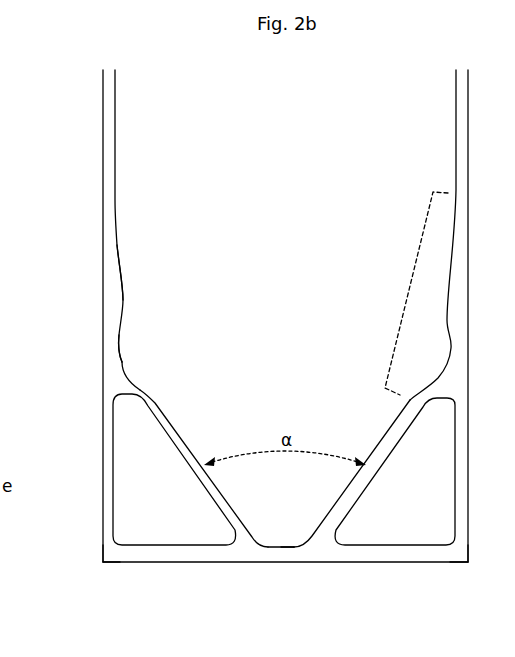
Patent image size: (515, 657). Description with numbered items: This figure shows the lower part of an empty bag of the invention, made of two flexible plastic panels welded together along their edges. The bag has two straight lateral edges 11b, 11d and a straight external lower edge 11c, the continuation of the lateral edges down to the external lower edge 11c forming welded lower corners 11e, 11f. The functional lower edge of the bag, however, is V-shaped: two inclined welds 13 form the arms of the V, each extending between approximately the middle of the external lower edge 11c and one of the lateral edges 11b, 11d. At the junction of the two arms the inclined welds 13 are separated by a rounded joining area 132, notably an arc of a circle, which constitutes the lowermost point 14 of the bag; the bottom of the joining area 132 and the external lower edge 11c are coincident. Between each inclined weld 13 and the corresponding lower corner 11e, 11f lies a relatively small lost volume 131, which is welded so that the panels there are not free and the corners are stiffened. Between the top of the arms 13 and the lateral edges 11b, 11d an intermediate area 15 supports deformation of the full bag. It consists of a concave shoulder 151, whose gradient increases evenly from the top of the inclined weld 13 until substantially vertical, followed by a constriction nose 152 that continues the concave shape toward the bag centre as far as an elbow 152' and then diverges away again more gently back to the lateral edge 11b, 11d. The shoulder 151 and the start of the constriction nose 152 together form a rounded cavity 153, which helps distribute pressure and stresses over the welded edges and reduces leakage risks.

The lateral edge 11b is at (463, 112).
The external lower edge 11c is at (243, 550).
The lateral edge 11d is at (110, 96).
The lower corner 11e is at (457, 555).
The lower corner 11f is at (107, 547).
The inclined weld 13 is at (187, 442).
The lost volume 131 is at (150, 525).
The rounded joining area 132 is at (275, 553).
The lowermost point 14 is at (288, 547).
The intermediate area 15 is at (410, 290).
The concave shoulder 151 is at (127, 377).
The constriction nose 152 is at (72, 216).
The elbow 152' is at (173, 281).
The cavity 153 is at (127, 355).